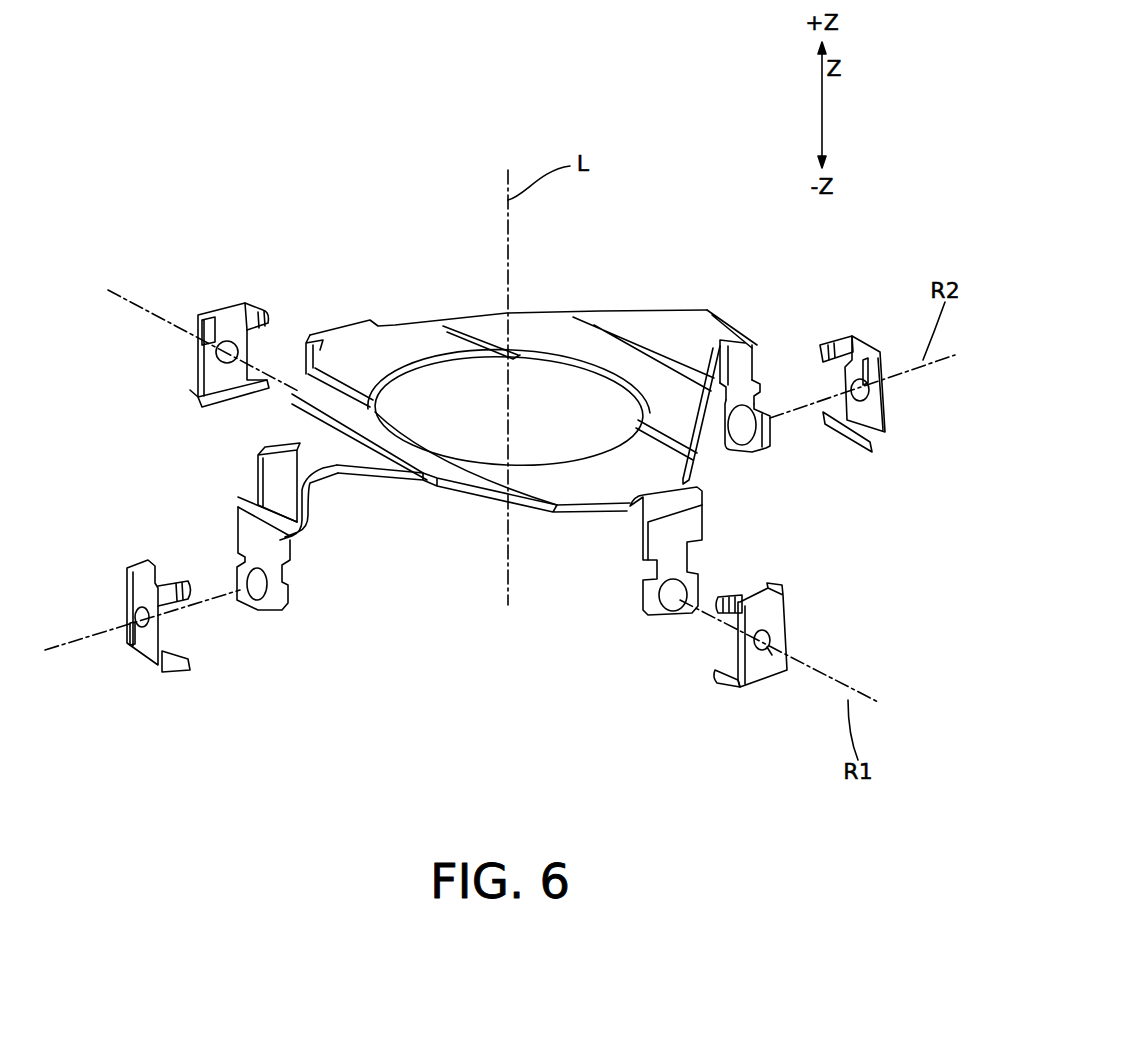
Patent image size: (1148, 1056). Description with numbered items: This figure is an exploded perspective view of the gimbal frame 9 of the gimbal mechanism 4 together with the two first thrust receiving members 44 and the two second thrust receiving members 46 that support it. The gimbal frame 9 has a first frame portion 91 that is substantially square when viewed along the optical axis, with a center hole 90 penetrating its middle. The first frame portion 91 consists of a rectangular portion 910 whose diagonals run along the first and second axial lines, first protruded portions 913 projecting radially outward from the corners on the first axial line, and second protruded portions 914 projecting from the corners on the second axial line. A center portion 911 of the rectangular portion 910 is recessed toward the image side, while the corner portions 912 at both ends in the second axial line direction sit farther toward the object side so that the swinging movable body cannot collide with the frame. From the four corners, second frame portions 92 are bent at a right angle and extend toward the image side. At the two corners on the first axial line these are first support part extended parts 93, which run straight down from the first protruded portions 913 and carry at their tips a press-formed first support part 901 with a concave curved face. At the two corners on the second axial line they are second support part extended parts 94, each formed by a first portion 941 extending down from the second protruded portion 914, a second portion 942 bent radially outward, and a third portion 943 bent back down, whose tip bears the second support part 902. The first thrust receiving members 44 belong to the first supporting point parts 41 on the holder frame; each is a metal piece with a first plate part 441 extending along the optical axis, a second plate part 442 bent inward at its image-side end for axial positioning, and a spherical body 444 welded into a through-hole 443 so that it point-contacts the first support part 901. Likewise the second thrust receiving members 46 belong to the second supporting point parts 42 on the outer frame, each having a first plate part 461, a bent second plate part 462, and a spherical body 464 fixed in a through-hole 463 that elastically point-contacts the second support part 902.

The gimbal mechanism 4 is at (499, 425).
The gimbal frame 9 is at (613, 306).
The center hole 90 is at (562, 366).
The first frame portion 91 is at (541, 308).
The rectangular portion 910 is at (497, 482).
The center portion 911 is at (418, 340).
The corner portions 912 is at (651, 326).
The first protruded portions 913 is at (360, 330).
The second protruded portions 914 is at (713, 312).
The second frame portions 92 is at (499, 469).
The first support part extended parts 93 is at (304, 350).
The second support part extended parts 94 is at (304, 532).
The first portion 941 is at (260, 466).
The second portion 942 is at (246, 497).
The third portion 943 is at (250, 535).
The first support part 901 is at (671, 600).
The second support part 902 is at (258, 594).
The first supporting point parts 41 is at (521, 476).
The first thrust receiving members 44 is at (236, 298).
The first plate part 441 is at (206, 372).
The second plate part 442 is at (200, 403).
The through-hole 443 is at (772, 655).
The spherical body 444 is at (214, 351).
The second supporting point parts 42 is at (506, 489).
The second thrust receiving members 46 is at (852, 332).
The first plate part 461 is at (870, 412).
The second plate part 462 is at (845, 445).
The through-hole 463 is at (130, 647).
The spherical body 464 is at (872, 388).